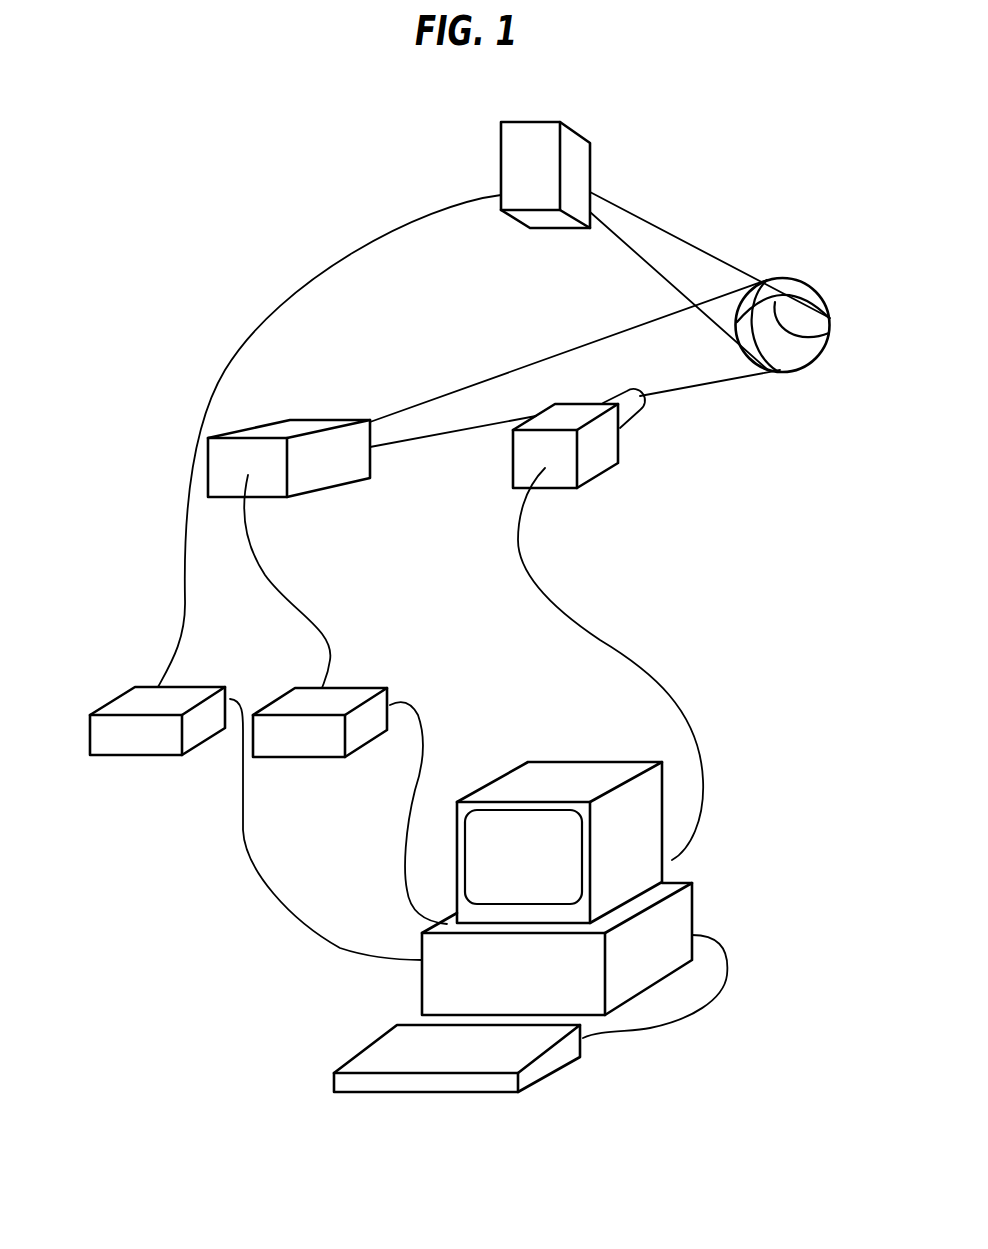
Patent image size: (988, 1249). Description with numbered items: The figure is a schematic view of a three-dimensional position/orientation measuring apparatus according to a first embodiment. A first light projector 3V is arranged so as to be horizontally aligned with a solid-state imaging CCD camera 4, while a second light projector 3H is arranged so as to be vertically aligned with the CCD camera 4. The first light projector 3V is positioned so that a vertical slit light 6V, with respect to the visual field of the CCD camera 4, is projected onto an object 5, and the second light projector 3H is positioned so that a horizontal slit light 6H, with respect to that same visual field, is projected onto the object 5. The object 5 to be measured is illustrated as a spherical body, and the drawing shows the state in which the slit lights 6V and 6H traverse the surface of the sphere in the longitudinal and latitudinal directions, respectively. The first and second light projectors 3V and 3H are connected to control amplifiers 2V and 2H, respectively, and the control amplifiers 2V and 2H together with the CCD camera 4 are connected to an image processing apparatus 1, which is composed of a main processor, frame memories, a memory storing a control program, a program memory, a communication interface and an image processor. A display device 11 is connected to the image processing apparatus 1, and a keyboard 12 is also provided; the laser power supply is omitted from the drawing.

The image processing apparatus 1 is at (386, 1000).
The control amplifier 2H is at (108, 700).
The control amplifier 2V is at (370, 688).
The second light projector 3H is at (501, 157).
The first light projector 3V is at (325, 420).
The CCD camera 4 is at (596, 470).
The object 5 is at (808, 364).
The horizontal slit light 6H is at (830, 337).
The vertical slit light 6V is at (757, 366).
The display device 11 is at (512, 773).
The keyboard 12 is at (358, 1053).